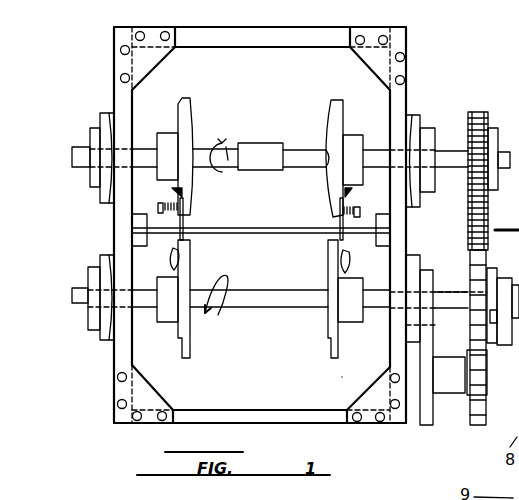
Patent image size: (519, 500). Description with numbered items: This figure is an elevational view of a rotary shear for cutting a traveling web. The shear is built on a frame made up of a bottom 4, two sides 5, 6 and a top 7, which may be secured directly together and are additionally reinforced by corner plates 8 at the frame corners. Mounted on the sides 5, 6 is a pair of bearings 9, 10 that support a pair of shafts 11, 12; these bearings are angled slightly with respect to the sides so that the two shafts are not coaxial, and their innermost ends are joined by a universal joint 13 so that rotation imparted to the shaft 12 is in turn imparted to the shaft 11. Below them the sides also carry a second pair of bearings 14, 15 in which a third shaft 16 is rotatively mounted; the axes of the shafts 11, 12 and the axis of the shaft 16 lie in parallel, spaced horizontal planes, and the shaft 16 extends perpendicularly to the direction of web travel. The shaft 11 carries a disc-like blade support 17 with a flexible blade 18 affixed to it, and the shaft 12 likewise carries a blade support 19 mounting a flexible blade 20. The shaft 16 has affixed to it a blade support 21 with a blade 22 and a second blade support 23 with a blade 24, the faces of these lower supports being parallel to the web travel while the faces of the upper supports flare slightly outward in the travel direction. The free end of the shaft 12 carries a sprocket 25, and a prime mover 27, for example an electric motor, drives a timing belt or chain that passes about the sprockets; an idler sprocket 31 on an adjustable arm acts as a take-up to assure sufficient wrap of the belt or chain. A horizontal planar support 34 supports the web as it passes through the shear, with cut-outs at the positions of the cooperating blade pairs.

The bottom 4 is at (185, 415).
The side 5 is at (118, 213).
The side 6 is at (407, 228).
The top 7 is at (245, 32).
The corner plates 8 is at (143, 50).
The bearing 9 is at (90, 130).
The bearing 10 is at (430, 133).
The shaft 11 is at (138, 157).
The shaft 12 is at (375, 155).
The universal joint 13 is at (258, 143).
The bearing 14 is at (88, 322).
The bearing 15 is at (428, 318).
The third shaft 16 is at (258, 302).
The disc-like blade support 17 is at (182, 127).
The flexible blade 18 is at (178, 223).
The blade support 19 is at (347, 122).
The flexible blade 20 is at (343, 222).
The blade support 21 is at (192, 333).
The blade 22 is at (178, 238).
The second blade support 23 is at (332, 322).
The blade 24 is at (357, 250).
The sprocket 25 is at (468, 123).
The prime mover 27 is at (342, 377).
The idler sprocket 31 is at (518, 352).
The horizontal planar support 34 is at (240, 228).